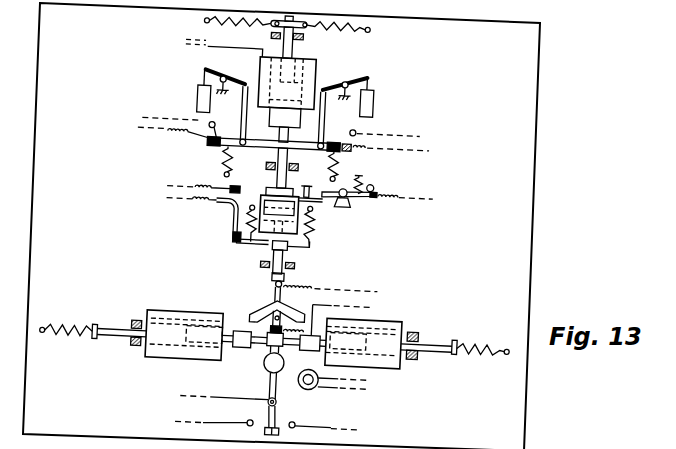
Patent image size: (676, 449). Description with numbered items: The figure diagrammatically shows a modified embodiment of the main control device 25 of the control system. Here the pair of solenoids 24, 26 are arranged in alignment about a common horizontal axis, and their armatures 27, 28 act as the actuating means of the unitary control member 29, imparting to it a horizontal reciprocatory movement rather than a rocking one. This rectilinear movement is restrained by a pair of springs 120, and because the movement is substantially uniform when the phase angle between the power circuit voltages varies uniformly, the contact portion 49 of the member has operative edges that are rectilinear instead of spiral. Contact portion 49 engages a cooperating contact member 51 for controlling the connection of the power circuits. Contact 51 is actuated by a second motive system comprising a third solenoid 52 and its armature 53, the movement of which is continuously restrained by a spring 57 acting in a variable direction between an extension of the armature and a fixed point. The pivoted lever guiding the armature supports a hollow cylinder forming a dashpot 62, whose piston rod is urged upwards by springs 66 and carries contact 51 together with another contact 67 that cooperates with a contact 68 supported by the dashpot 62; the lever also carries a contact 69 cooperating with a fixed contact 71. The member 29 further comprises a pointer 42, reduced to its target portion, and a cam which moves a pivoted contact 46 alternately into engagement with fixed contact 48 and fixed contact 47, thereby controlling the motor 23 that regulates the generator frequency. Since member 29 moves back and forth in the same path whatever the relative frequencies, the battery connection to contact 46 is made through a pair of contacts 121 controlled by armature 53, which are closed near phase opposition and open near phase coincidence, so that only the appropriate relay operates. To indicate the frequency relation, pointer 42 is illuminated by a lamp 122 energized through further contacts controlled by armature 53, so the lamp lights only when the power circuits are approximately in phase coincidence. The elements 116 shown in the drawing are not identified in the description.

The device 25 is at (530, 265).
The spring 57 is at (220, 29).
The third solenoid 52 is at (296, 65).
The armature 53 is at (288, 118).
The weight 116 is at (185, 100).
The pair of contacts 121 is at (203, 125).
The fixed contact 71 is at (341, 127).
The contact 68 is at (229, 189).
The contact 69 is at (345, 149).
The springs 66 is at (320, 221).
The dashpot 62 is at (266, 237).
The contact 67 is at (214, 216).
The motor 23 is at (366, 184).
The contact member 51 is at (272, 287).
The contact portion 49 is at (260, 311).
The unitary control member 29 is at (268, 360).
The armature 27 is at (260, 348).
The armature 28 is at (311, 349).
The solenoid 24 is at (170, 363).
The solenoid 26 is at (389, 363).
The pair of springs 120 is at (75, 337).
The pointer portion 42 is at (270, 377).
The pivoted contact 46 is at (281, 414).
The fixed contact 48 is at (213, 428).
The fixed contact 47 is at (323, 434).
The lamp 122 is at (316, 387).